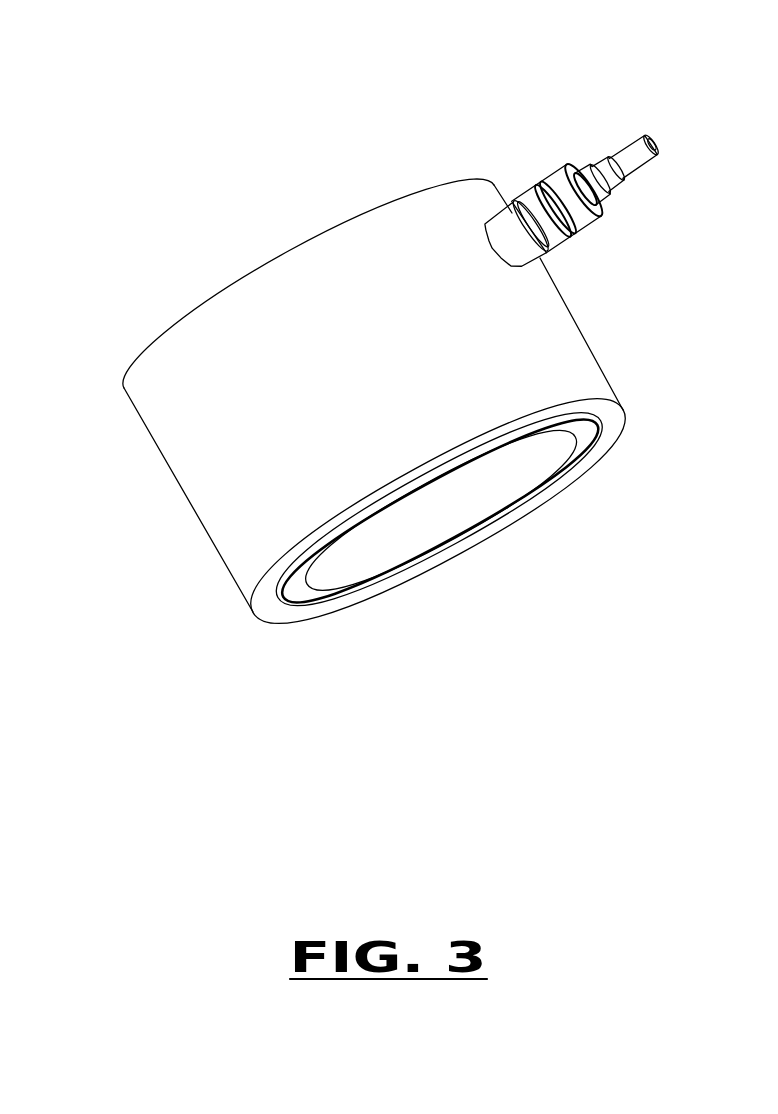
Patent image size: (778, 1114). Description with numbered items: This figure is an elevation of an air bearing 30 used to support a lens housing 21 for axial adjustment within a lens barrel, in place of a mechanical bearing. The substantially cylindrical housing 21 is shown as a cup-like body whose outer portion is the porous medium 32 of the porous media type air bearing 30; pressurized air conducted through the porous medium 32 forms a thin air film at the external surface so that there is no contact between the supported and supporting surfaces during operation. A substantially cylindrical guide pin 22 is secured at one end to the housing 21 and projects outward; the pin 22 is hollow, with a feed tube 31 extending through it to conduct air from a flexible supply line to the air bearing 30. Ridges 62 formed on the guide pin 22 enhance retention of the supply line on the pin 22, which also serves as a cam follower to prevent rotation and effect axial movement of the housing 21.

The air bearing 30 is at (137, 123).
The porous medium 32 is at (212, 338).
The lens housing 21 is at (300, 582).
The guide pin 22 is at (540, 167).
The ridges 62 is at (620, 166).
The feed tube 31 is at (650, 145).